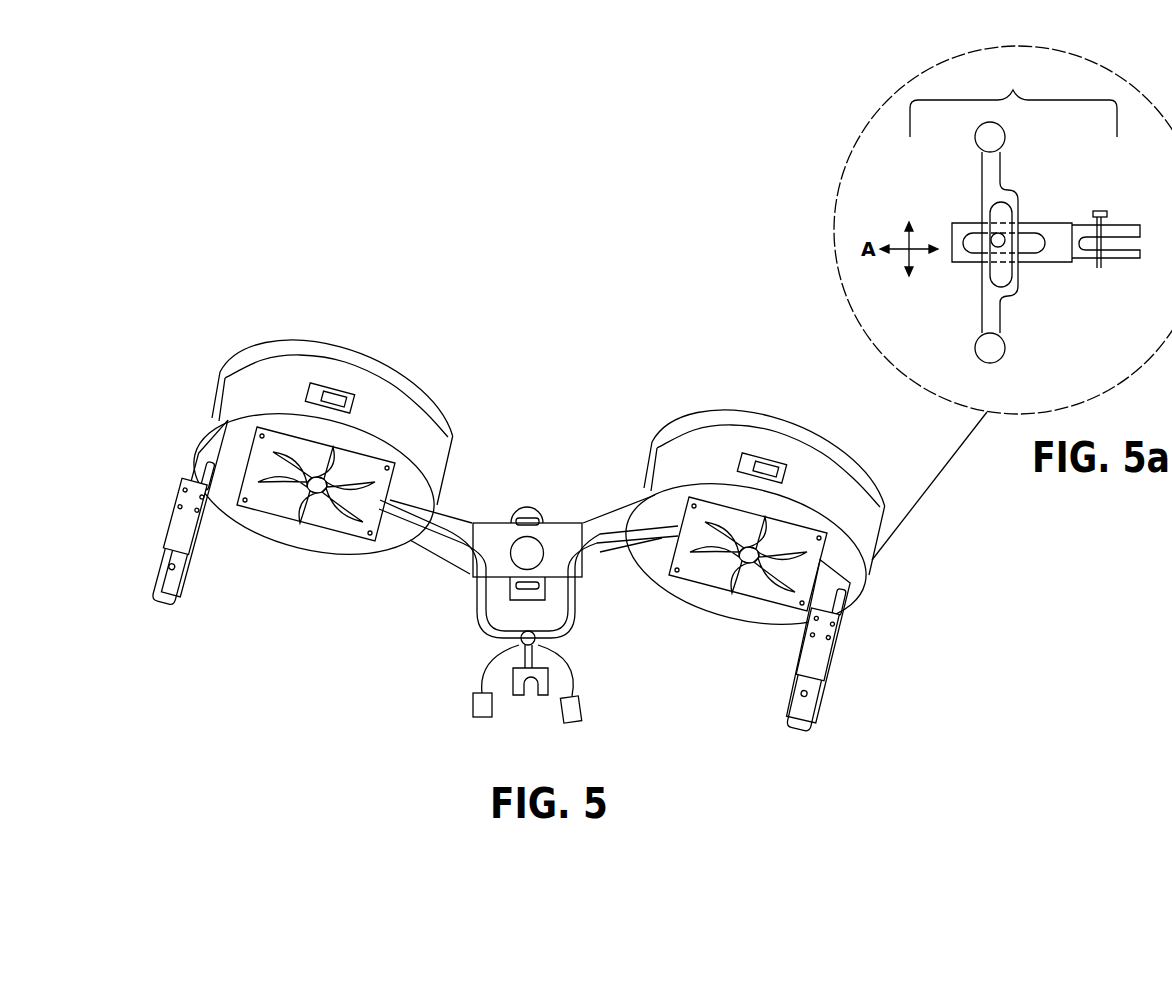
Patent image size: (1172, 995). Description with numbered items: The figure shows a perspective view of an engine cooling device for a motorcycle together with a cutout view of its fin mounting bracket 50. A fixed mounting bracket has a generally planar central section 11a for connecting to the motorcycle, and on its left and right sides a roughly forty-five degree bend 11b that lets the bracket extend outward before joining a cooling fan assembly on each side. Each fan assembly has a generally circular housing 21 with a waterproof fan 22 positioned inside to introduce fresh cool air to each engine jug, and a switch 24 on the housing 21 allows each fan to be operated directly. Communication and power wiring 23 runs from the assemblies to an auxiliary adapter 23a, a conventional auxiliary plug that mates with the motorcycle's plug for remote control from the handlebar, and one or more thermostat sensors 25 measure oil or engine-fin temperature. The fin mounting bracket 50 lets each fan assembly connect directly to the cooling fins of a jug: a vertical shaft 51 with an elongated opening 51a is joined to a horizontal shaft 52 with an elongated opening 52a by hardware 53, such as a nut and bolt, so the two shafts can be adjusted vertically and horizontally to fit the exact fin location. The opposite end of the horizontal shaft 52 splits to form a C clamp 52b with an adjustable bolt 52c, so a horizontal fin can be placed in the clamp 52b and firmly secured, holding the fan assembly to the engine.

In FIG. 5, the central section 11a is at (530, 510).
In FIG. 5, the bend 11b is at (452, 520).
In FIG. 5, the housing 21 is at (408, 430).
In FIG. 5, the waterproof fan 22 is at (312, 533).
In FIG. 5, the communication and power wiring 23 is at (440, 540).
In FIG. 5, the auxiliary adapter 23a is at (531, 695).
In FIG. 5, the switch 24 is at (337, 397).
In FIG. 5, the thermostat sensor 25 is at (472, 705).
In FIG. 5a, the fin mounting bracket 50 is at (1013, 99).
In FIG. 5, the vertical shaft 51 is at (222, 440).
In FIG. 5a, the vertical shaft 51 is at (992, 170).
In FIG. 5a, the elongated opening 51a is at (1003, 211).
In FIG. 5, the horizontal shaft 52 is at (182, 514).
In FIG. 5a, the horizontal shaft 52 is at (963, 258).
In FIG. 5a, the elongated opening 52a is at (974, 233).
In FIG. 5, the C clamp 52b is at (172, 598).
In FIG. 5a, the C clamp 52b is at (1122, 252).
In FIG. 5, the adjustable bolt 52c is at (168, 570).
In FIG. 5a, the adjustable bolt 52c is at (1107, 215).
In FIG. 5a, the hardware 53 is at (1003, 243).